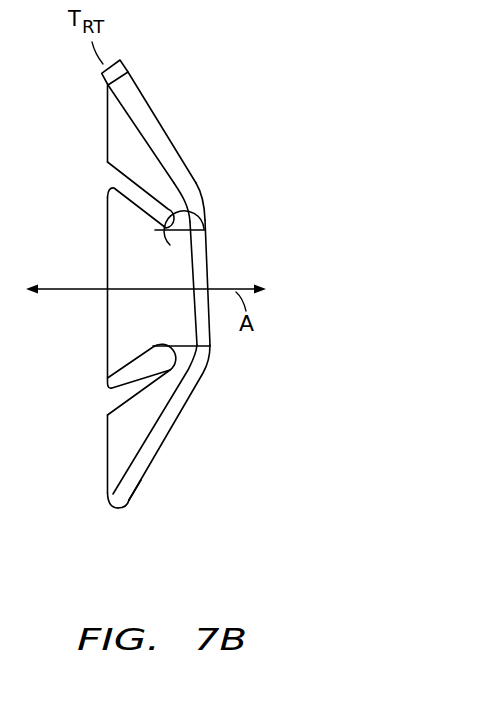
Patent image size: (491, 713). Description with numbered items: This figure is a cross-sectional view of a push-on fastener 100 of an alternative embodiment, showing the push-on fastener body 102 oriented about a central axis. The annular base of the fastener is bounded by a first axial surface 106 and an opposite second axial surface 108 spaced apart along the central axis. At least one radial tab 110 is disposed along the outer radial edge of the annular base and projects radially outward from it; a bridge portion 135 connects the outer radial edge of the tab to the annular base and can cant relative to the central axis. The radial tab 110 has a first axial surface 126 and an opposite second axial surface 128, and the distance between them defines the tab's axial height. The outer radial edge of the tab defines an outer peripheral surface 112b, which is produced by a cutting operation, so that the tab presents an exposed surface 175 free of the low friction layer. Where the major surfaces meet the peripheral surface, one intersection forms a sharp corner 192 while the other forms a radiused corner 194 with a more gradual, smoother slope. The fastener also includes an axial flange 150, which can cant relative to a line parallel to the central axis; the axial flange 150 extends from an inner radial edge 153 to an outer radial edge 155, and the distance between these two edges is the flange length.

The push-on fastener 100 is at (226, 36).
The outer peripheral surface 112b is at (128, 72).
The exposed surface 175 is at (108, 84).
The first axial surface 126 is at (133, 115).
The second axial surface 128 is at (145, 100).
The first axial surface 106 is at (198, 177).
The axial flange 150 is at (208, 244).
The outer radial edge 155 is at (198, 207).
The inner radial edge 153 is at (171, 232).
The second axial surface 108 is at (108, 242).
The radial tab 110 is at (108, 467).
The bridge portion 135 is at (140, 446).
The push-on fastener body 102 is at (197, 392).
The sharp corner 192 is at (108, 495).
The radiused corner 194 is at (130, 512).